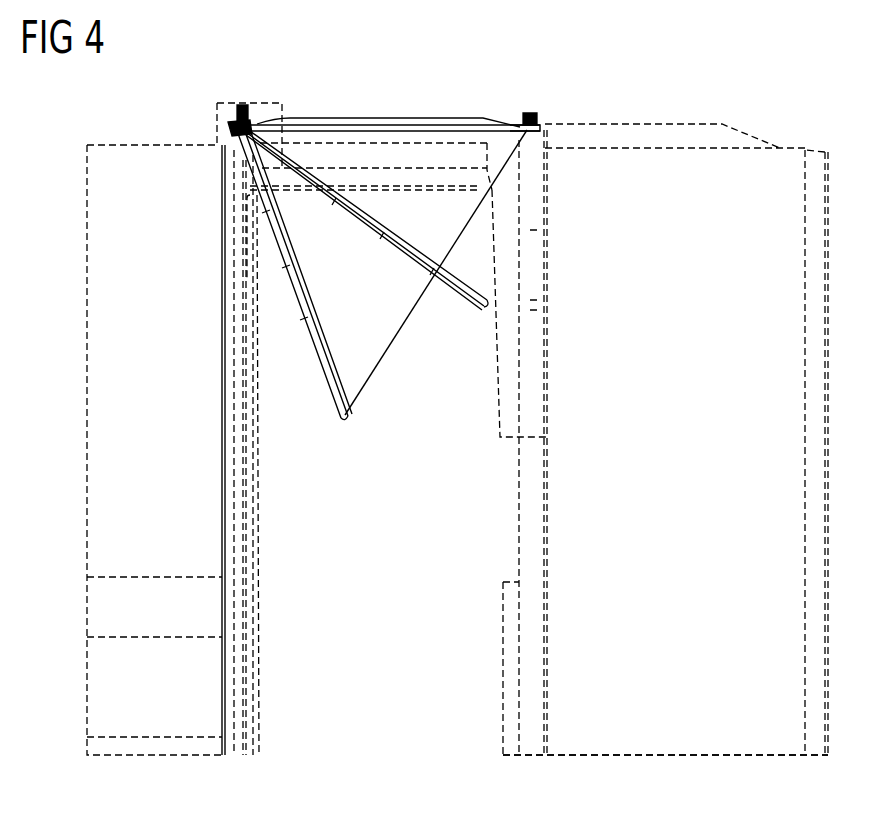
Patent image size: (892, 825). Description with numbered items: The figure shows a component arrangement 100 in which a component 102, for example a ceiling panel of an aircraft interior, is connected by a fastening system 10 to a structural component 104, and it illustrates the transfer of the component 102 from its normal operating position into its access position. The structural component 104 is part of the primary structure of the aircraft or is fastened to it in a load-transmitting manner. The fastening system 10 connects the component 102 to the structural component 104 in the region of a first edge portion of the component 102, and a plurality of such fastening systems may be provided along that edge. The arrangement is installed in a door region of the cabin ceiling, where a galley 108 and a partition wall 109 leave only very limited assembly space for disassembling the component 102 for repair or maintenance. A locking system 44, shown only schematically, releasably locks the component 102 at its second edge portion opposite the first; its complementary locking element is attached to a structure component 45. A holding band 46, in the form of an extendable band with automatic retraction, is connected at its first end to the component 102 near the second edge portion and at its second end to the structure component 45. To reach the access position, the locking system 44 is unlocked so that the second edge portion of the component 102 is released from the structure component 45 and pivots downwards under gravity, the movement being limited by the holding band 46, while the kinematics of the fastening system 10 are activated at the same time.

The fastening system 10 is at (215, 113).
The locking system 44 is at (523, 124).
The structure component 45 is at (537, 115).
The holding band 46 is at (396, 333).
The component arrangement 100 is at (563, 170).
The component 102 is at (282, 250).
The structural component 104 is at (262, 115).
The galley 108 is at (660, 736).
The partition wall 109 is at (100, 382).